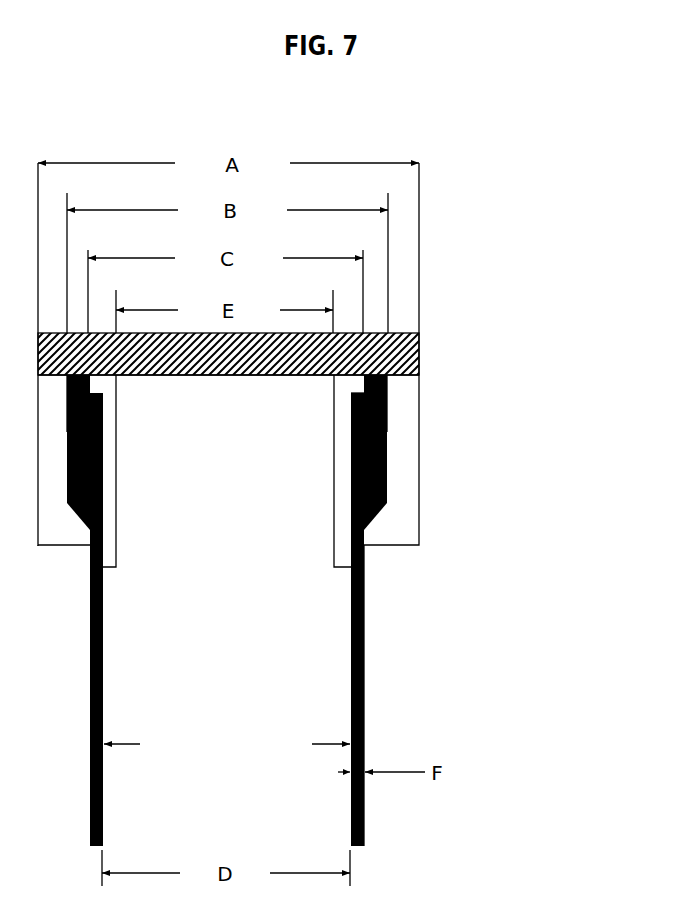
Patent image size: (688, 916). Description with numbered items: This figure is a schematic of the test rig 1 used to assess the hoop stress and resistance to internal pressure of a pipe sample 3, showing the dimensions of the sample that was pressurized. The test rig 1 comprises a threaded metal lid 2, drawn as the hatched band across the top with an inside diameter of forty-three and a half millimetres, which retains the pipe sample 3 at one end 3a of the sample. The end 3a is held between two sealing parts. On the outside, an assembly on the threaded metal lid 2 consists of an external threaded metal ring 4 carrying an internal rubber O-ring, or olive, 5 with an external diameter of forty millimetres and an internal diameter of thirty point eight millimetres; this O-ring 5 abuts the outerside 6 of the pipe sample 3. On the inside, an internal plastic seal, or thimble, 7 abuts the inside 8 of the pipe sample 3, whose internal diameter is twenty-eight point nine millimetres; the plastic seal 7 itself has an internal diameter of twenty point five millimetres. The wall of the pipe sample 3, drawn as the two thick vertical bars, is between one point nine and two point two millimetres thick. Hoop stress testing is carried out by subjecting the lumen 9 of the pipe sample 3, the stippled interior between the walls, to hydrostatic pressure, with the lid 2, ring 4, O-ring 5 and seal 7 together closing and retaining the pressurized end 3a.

The test rig 1 is at (475, 273).
The threaded metal lid 2 is at (420, 350).
The pipe sample 3 is at (365, 690).
The one end of the pipe sample 3a is at (368, 393).
The external threaded metal ring 4 is at (419, 543).
The internal rubber O-ring (olive) 5 is at (387, 485).
The outerside of the pipe sample 6 is at (365, 612).
The internal plastic seal (thimble) 7 is at (387, 412).
The inside of the pipe sample 8 is at (350, 658).
The lumen 9 is at (237, 756).